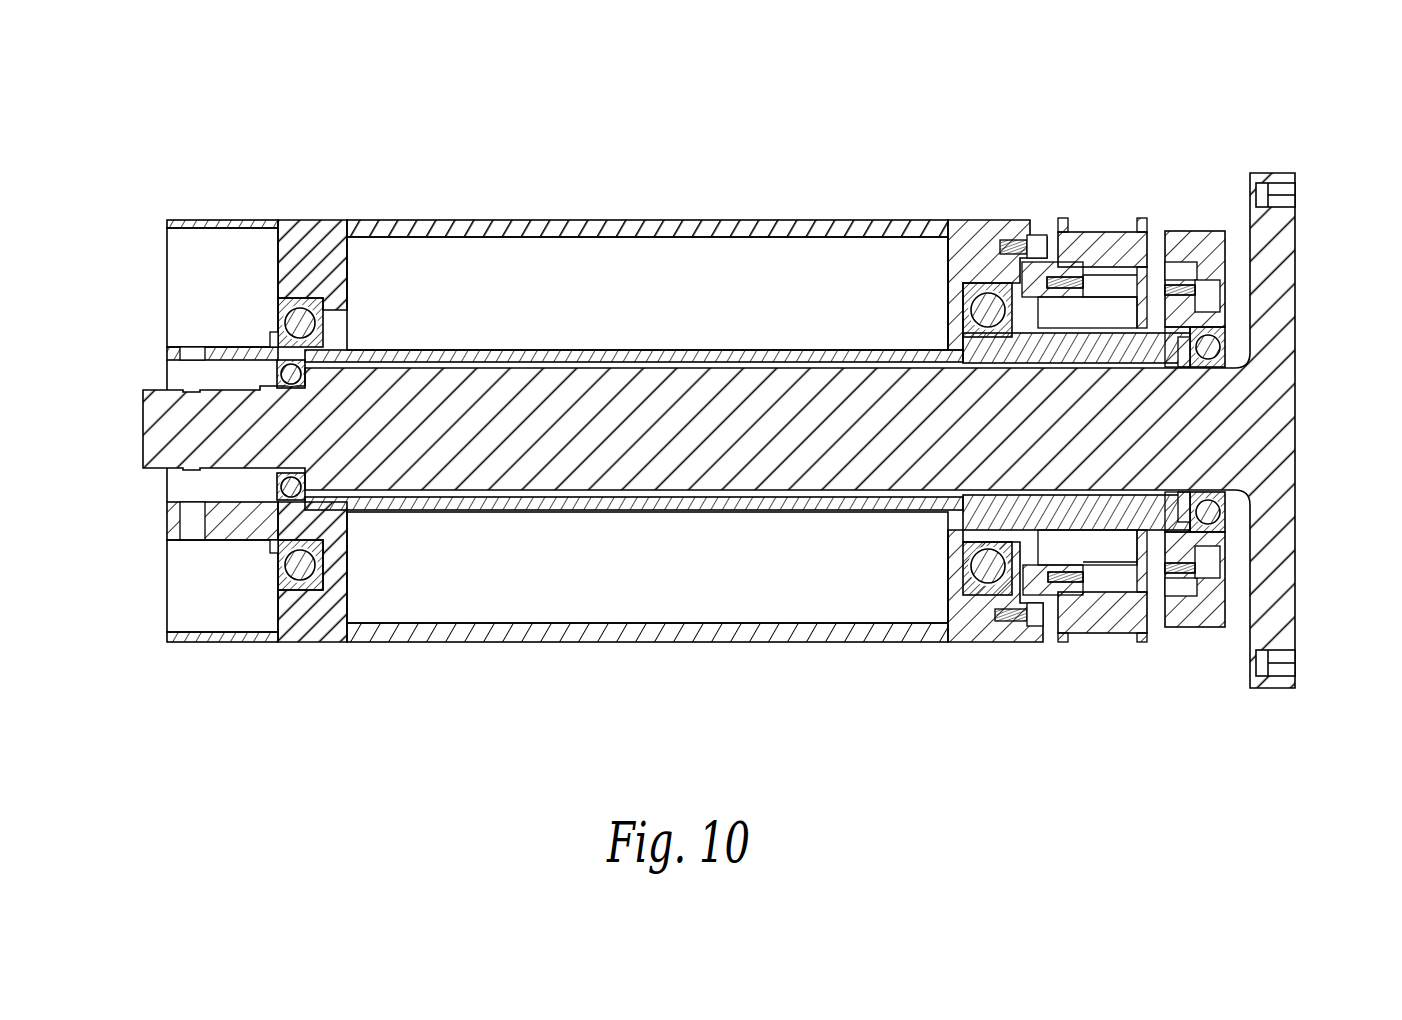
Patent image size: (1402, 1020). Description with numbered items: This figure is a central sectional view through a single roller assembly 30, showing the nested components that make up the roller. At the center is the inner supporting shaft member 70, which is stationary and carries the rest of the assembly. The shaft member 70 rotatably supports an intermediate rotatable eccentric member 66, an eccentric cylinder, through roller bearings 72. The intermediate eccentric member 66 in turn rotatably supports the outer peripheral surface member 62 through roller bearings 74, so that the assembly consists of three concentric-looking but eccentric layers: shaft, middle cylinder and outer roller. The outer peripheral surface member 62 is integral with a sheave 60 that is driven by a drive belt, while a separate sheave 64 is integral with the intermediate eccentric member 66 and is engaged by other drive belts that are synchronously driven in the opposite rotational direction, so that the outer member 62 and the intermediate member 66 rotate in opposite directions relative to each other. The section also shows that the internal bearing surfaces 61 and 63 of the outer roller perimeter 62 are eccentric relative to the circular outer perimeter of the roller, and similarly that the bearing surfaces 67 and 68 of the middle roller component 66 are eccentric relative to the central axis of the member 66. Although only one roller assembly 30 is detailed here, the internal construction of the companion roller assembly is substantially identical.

The roller assembly 30 is at (548, 140).
The sheave 60 is at (1120, 642).
The internal bearing surface 61 is at (347, 302).
The outer peripheral surface member 62 is at (430, 218).
The internal bearing surface 63 is at (980, 282).
The sheave 64 is at (1178, 232).
The intermediate rotatable eccentric member 66 is at (163, 520).
The bearing surface 67 is at (345, 565).
The bearing surface 68 is at (963, 557).
The inner supporting shaft member 70 is at (515, 452).
The roller bearings 72 is at (277, 375).
The roller bearings 74 is at (282, 322).